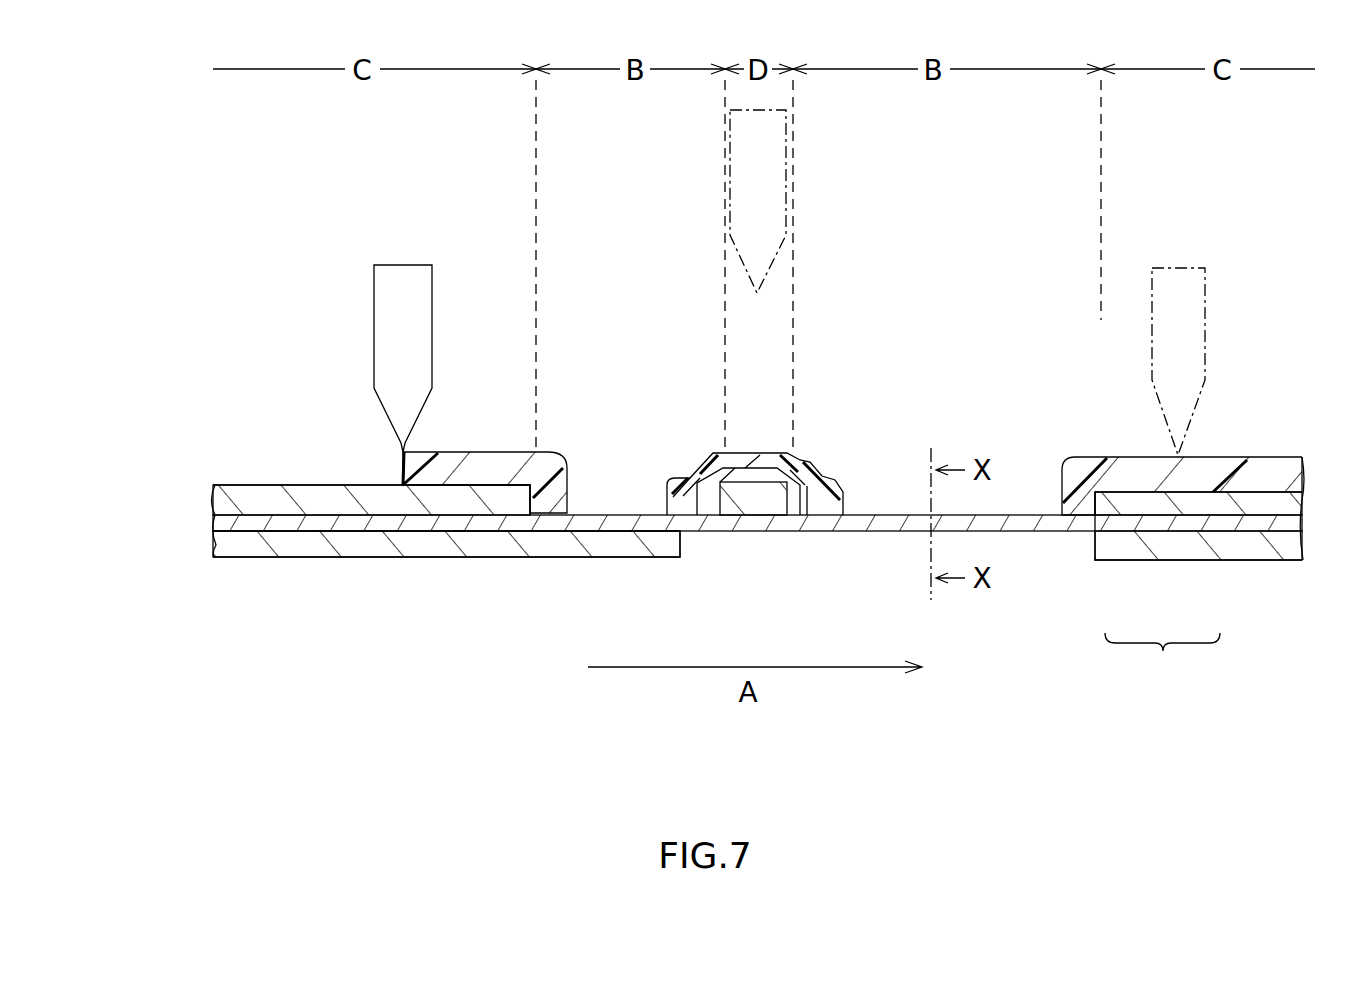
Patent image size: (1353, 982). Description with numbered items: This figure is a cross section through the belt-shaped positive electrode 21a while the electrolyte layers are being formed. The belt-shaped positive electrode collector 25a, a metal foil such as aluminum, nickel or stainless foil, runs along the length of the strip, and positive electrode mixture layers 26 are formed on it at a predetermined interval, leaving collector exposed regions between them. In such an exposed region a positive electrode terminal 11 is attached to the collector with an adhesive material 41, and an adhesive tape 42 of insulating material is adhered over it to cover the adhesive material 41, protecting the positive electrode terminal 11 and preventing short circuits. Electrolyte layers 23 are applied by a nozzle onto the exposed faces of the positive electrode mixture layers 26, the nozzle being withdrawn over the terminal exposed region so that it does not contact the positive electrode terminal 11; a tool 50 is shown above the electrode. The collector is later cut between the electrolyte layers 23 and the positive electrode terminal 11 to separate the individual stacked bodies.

The positive electrode terminal 11 is at (733, 508).
The belt-shaped positive electrode 21a is at (1162, 667).
The electrolyte layer 23 is at (1067, 473).
The belt-shaped positive electrode collector 25a is at (1143, 527).
The positive electrode mixture layer 26 is at (1248, 508).
The adhesive material 41 is at (800, 493).
The adhesive tape 42 is at (820, 508).
The bonding tool 50 is at (401, 265).